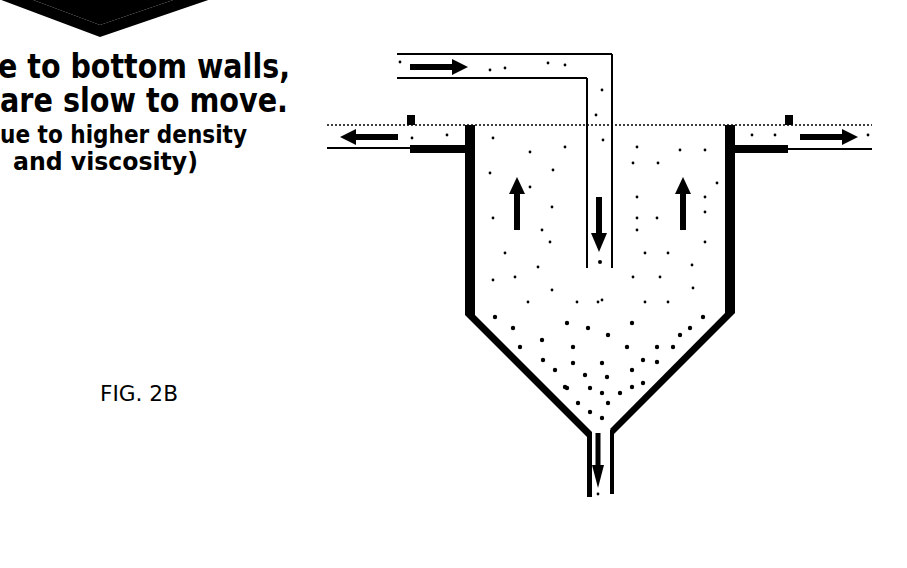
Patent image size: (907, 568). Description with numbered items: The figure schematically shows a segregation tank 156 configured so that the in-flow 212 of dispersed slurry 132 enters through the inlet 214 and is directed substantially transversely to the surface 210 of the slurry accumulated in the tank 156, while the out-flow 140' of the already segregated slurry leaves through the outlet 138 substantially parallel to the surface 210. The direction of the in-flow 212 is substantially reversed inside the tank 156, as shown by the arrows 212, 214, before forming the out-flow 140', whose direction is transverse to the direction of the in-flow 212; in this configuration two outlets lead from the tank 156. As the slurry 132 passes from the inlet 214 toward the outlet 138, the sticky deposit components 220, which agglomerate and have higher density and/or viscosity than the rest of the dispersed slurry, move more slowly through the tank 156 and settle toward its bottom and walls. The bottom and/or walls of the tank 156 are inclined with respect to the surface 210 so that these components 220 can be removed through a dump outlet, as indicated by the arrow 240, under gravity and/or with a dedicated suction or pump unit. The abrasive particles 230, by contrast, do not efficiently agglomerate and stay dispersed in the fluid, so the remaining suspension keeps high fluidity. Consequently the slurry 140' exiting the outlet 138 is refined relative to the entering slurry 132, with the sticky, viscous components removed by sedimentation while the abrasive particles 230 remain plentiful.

The dispersed slurry 132 is at (413, 67).
The in-flow of dispersed slurry 212 is at (590, 220).
The inlet 214 is at (430, 258).
The outlet 138 is at (396, 123).
The out-flow of segregated slurry 140' is at (815, 145).
The surface of the slurry 210 is at (648, 78).
The segregation tank 156 is at (659, 282).
The removal of sticky deposit components 240 is at (607, 465).
The abrasive particles 230 is at (703, 283).
The sticky deposit components 220 is at (583, 383).